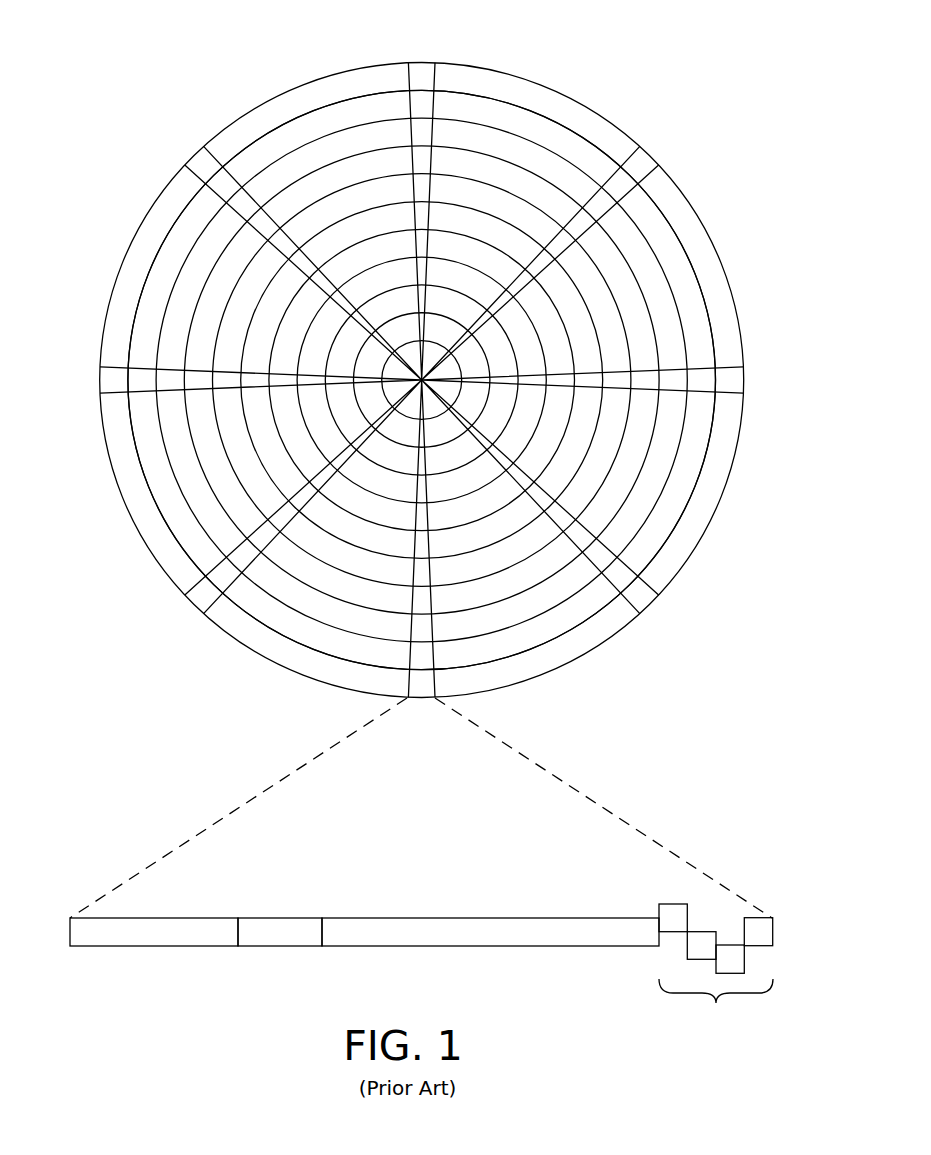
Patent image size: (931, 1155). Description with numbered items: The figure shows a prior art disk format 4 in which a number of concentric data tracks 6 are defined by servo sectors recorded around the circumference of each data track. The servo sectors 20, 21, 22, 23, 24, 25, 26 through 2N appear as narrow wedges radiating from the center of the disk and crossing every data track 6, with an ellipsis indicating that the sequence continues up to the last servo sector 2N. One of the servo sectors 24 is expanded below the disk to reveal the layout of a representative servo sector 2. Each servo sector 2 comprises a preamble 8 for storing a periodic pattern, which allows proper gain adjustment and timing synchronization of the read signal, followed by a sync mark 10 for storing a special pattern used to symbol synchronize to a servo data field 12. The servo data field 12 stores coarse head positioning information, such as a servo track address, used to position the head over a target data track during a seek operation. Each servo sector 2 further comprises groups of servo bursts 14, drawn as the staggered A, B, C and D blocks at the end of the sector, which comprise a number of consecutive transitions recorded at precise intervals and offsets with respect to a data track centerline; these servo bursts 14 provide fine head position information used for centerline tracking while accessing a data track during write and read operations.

The disk format 4 is at (185, 68).
The data track 6 is at (532, 125).
The servo sector 2 is at (422, 391).
The servo sector 2_0 20 is at (423, 72).
The servo sector 2_1 21 is at (643, 163).
The servo sector 2_2 22 is at (741, 381).
The servo sector 2_3 23 is at (642, 598).
The servo sector 2_4 24 is at (278, 773).
The servo sector 2_5 25 is at (198, 598).
The servo sector 2_6 26 is at (103, 378).
The servo sector 2_N 2N is at (200, 162).
The preamble 8 is at (133, 948).
The sync mark 10 is at (277, 948).
The servo data field 12 is at (477, 948).
The servo bursts 14 is at (646, 886).